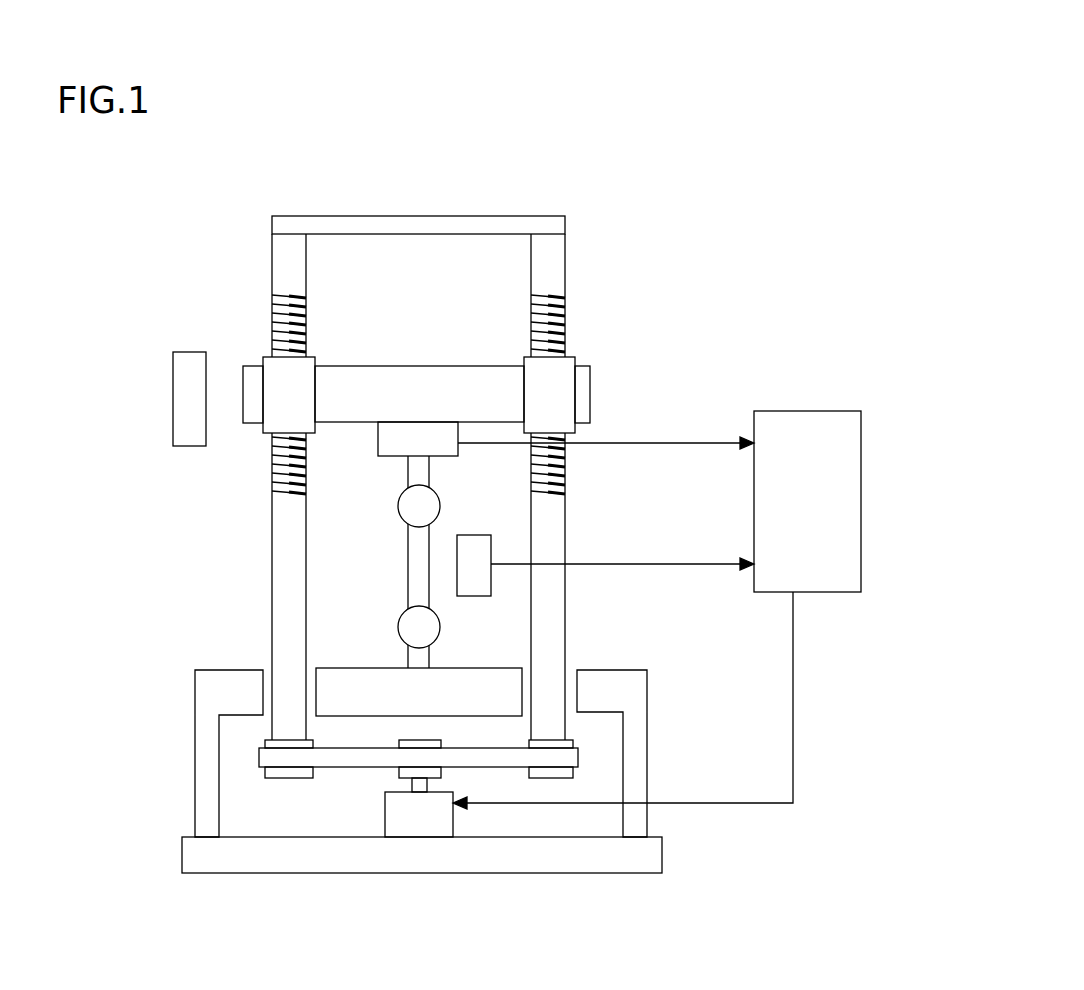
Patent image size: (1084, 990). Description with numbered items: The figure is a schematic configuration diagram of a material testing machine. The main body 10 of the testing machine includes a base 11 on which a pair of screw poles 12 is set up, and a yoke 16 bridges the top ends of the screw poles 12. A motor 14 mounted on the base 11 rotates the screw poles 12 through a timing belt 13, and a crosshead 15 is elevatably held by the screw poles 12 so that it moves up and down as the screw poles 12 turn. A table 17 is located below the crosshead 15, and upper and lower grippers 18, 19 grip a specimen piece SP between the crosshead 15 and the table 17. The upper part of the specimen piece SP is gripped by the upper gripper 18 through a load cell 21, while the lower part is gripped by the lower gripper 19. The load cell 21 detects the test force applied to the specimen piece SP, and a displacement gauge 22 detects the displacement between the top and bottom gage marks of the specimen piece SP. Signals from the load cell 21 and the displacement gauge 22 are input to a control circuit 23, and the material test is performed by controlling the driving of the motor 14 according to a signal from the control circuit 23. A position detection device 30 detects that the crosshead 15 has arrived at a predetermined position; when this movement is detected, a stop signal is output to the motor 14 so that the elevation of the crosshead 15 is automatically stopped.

The main body 10 is at (584, 186).
The base 11 is at (305, 873).
The screw poles 12 is at (272, 270).
The timing belt 13 is at (353, 770).
The motor 14 is at (440, 825).
The crosshead 15 is at (402, 365).
The yoke 16 is at (446, 216).
The table 17 is at (200, 670).
The upper gripper 18 is at (410, 506).
The lower gripper 19 is at (399, 630).
The load cell 21 is at (377, 444).
The displacement gauge 22 is at (477, 535).
The control circuit 23 is at (861, 505).
The position detection device 30 is at (173, 397).
The specimen piece SP is at (415, 569).